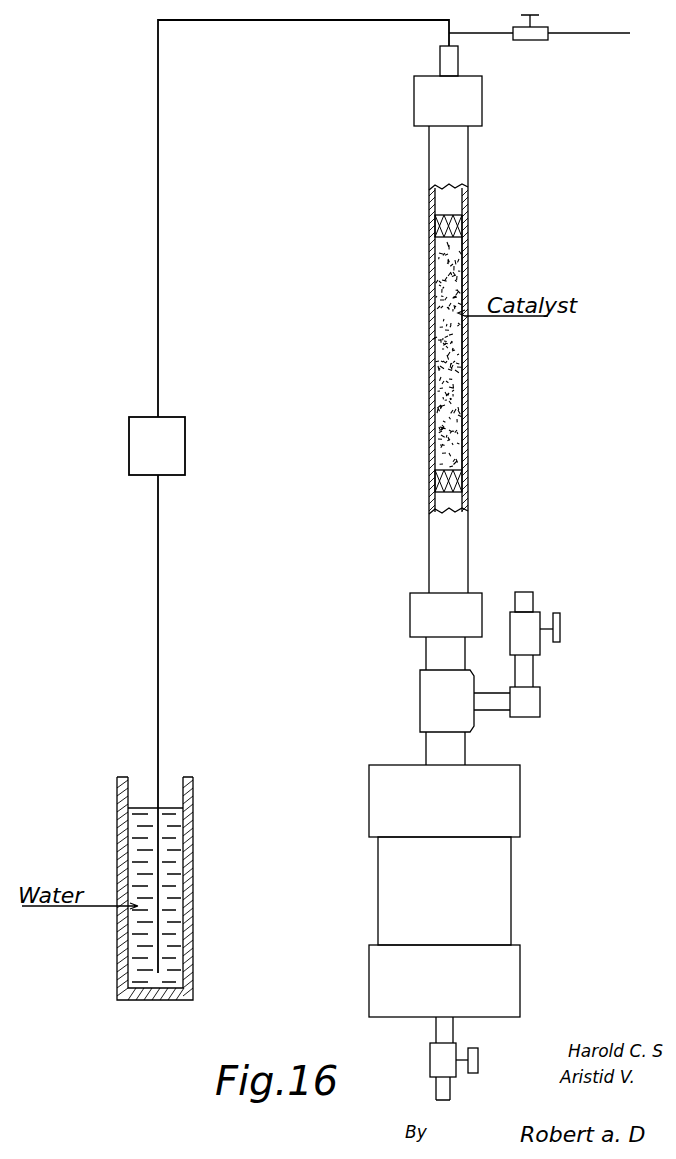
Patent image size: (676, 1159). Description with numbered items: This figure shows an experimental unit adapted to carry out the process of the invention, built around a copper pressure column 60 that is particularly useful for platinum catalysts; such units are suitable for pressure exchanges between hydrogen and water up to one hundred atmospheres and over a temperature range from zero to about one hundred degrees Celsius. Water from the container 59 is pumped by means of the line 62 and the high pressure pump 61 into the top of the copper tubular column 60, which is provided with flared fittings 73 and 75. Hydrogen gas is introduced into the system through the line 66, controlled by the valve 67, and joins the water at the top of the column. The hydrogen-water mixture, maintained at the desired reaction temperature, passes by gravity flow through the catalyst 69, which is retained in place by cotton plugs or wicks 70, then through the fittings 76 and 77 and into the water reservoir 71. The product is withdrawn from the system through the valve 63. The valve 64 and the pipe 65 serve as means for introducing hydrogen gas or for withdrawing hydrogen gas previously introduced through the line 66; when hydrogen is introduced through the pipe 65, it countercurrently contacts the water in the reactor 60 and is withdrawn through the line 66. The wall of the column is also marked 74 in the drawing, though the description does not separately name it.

The container 59 is at (193, 900).
The copper pressure column 60 is at (468, 385).
The high pressure pump 61 is at (185, 445).
The line 62 is at (158, 262).
The valve 63 is at (478, 1060).
The valve 64 is at (560, 629).
The pipe 65 is at (535, 672).
The line 66 is at (603, 33).
The valve 67 is at (525, 40).
The catalyst 69 is at (438, 262).
The cotton plugs or wicks 70 is at (435, 222).
The water reservoir 71 is at (511, 888).
The flared fitting 73 is at (414, 98).
The tube wall 74 is at (468, 252).
The flared fitting 75 is at (410, 607).
The fitting 76 is at (420, 703).
The fitting 77 is at (426, 745).